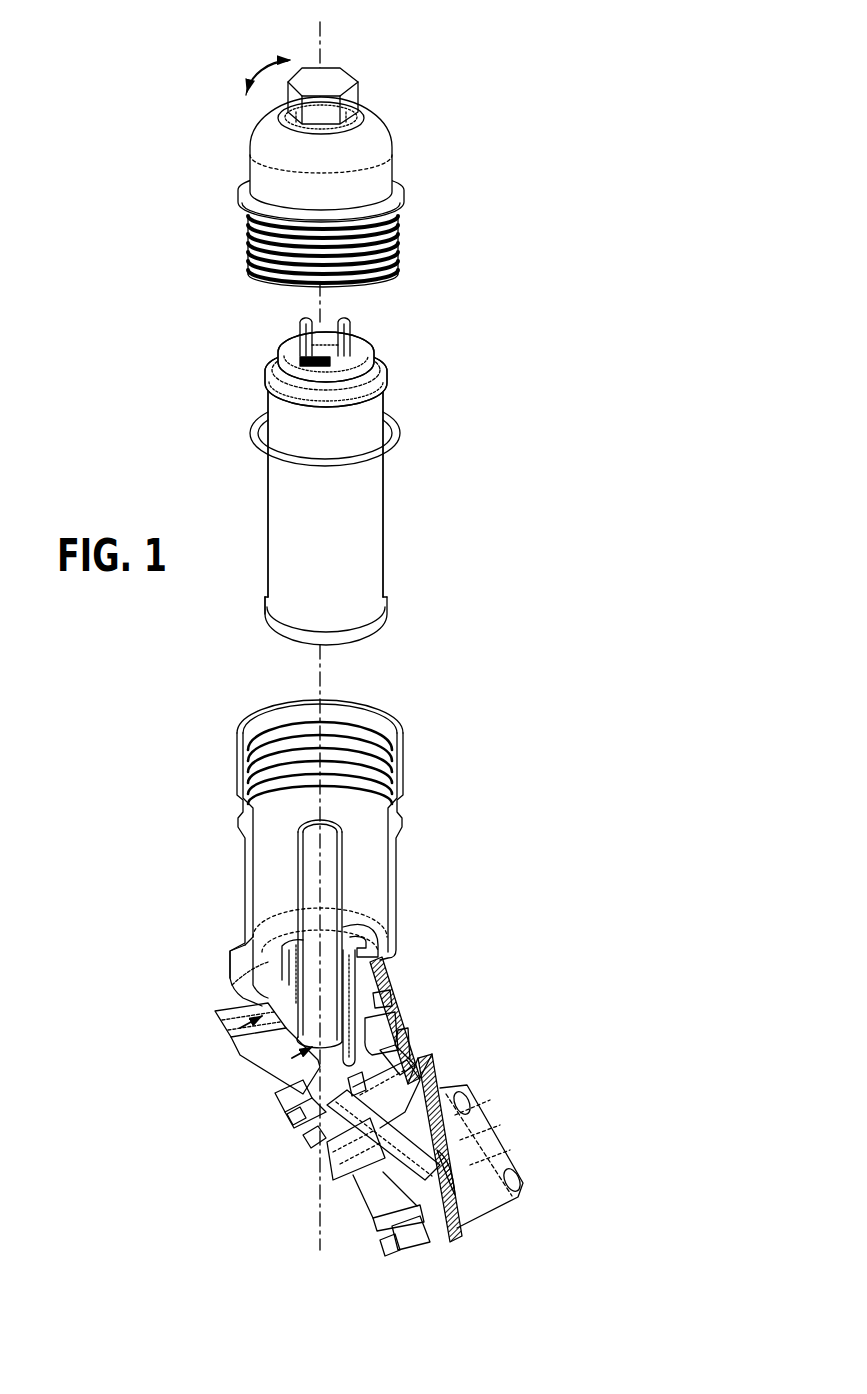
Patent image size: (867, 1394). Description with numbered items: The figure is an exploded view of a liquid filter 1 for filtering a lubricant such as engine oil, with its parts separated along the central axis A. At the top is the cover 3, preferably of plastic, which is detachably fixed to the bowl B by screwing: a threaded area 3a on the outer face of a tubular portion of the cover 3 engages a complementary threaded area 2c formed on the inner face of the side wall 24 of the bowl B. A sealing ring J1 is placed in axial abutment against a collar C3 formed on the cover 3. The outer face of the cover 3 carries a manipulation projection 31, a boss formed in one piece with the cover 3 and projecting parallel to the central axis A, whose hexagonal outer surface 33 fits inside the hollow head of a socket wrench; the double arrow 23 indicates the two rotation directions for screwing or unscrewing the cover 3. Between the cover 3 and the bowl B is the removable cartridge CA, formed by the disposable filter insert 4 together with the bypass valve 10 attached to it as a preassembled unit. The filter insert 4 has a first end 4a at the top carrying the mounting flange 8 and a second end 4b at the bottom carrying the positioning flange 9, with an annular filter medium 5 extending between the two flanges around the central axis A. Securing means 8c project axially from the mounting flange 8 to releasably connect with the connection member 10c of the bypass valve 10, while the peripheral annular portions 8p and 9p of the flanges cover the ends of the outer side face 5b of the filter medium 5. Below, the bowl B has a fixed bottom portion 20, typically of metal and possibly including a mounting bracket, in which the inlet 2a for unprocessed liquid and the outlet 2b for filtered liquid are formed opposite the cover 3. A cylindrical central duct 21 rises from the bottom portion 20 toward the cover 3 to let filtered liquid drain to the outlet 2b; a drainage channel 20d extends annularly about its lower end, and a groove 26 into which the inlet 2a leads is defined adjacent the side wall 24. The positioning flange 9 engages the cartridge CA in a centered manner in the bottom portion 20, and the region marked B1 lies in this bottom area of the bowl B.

The liquid filter 1 is at (357, 978).
The inlet 2a is at (235, 1035).
The outlet 2b is at (280, 1082).
The complementary threaded area 2c is at (382, 758).
The cover 3 is at (342, 143).
The threaded area 3a is at (399, 243).
The filter insert 4 is at (329, 481).
The first end 4a is at (268, 358).
The second end 4b is at (262, 613).
The filter medium 5 is at (336, 499).
The outer side face 5b is at (384, 482).
The mounting flange 8 is at (371, 387).
The securing means 8c is at (292, 368).
The peripheral annular portion 8p is at (372, 395).
The positioning flange 9 is at (332, 643).
The peripheral annular portion 9p is at (282, 623).
The bypass valve 10 is at (370, 336).
The connection member 10c is at (352, 356).
The bottom portion 20 is at (396, 961).
The drainage channel 20d is at (292, 946).
The central duct 21 is at (299, 894).
The double arrow 23 is at (252, 62).
The side wall 24 is at (249, 816).
The groove 26 is at (268, 956).
The manipulation projection 31 is at (335, 84).
The outer surface 33 is at (350, 105).
The central axis A is at (316, 36).
The bowl B is at (432, 990).
The bypass channel B1 is at (352, 930).
The collar C3 is at (402, 187).
The removable cartridge CA is at (262, 326).
The sealing ring J1 is at (262, 442).